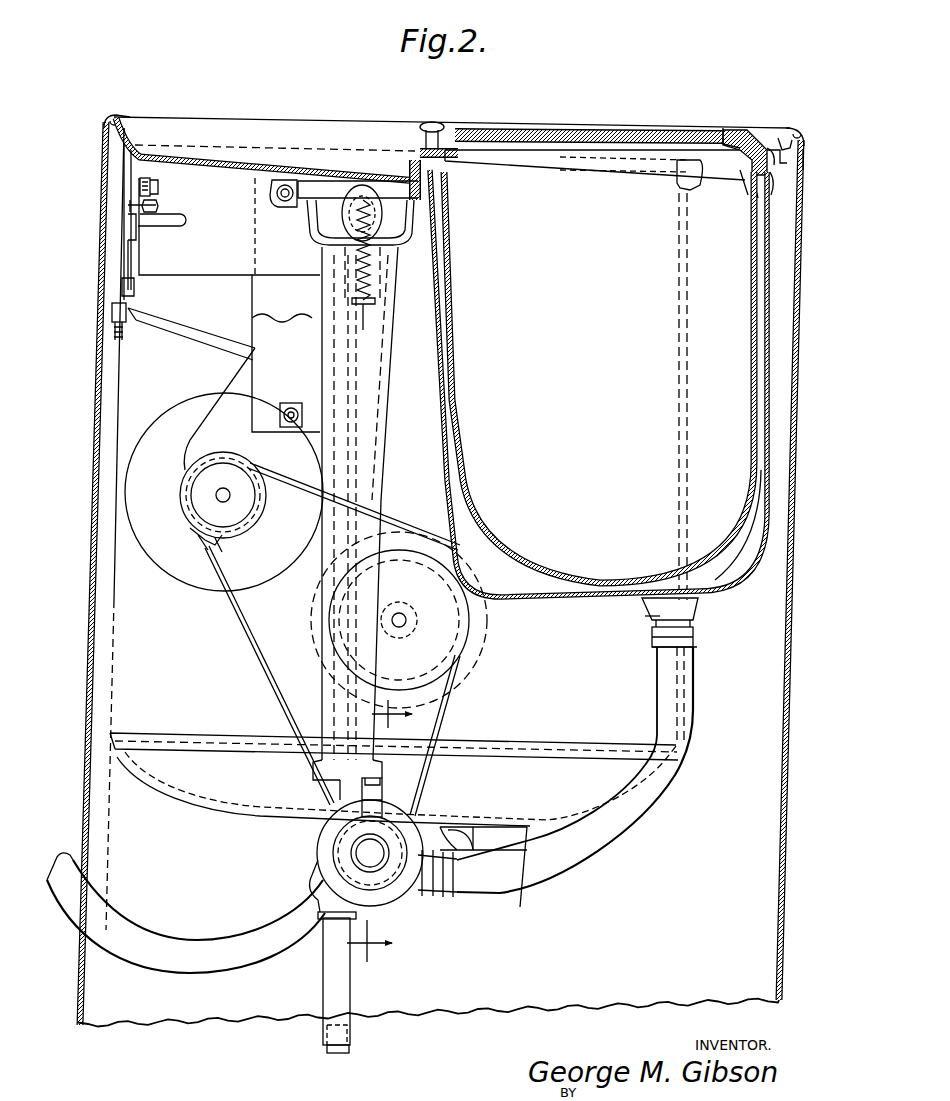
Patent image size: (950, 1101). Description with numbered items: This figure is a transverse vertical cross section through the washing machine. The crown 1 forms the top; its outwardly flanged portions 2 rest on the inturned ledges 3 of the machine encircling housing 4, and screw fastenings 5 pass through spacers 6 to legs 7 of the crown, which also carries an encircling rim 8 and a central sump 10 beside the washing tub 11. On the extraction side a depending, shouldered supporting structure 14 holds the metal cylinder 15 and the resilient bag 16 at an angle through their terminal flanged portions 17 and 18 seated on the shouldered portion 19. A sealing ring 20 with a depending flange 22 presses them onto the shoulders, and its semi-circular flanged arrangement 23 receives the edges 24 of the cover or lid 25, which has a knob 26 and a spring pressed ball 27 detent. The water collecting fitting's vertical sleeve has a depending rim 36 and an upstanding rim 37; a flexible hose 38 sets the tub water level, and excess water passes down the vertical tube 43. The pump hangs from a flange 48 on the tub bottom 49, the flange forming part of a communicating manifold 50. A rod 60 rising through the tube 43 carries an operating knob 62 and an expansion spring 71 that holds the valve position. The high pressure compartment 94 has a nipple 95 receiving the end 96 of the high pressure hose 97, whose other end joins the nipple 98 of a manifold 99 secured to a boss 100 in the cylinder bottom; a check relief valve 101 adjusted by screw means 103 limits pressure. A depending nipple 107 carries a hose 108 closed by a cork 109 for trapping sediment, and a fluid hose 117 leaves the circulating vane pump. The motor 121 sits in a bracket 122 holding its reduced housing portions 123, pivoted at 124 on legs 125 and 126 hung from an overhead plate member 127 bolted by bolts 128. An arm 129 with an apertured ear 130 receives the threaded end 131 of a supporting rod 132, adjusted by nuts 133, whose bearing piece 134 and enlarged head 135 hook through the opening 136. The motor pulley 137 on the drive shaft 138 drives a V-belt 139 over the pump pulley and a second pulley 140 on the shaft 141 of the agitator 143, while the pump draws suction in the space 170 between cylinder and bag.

The crown 1 is at (266, 129).
The outwardly flanged portions 2 is at (112, 116).
The inturned ledges 3 is at (104, 135).
The machine encircling housing 4 is at (97, 470).
The screw fastenings 5 is at (126, 202).
The spacers 6 is at (110, 170).
The legs 7 is at (274, 186).
The encircling barrier or rim 8 is at (330, 127).
The central sump 10 is at (379, 839).
The washing tub 11 is at (640, 690).
The supporting structure 14 is at (788, 162).
The metal cylinder 15 is at (770, 272).
The resilient bag 16 is at (757, 316).
The terminal flanged portion 17 is at (778, 140).
The terminal flanged portion 18 is at (760, 148).
The shouldered portion 19 is at (772, 178).
The sealing ring 20 is at (740, 168).
The depending flange 22 is at (426, 178).
The semi-circular flanged arrangement 23 is at (735, 148).
The edges 24 is at (728, 133).
The cover or lid 25 is at (522, 135).
The knob 26 is at (434, 124).
The spring pressed ball 27 is at (468, 165).
The depending rim 36 is at (376, 290).
The upstanding rim 37 is at (378, 257).
The flexible hose or conduit 38 is at (357, 185).
The tube or hose connection 43 is at (365, 468).
The flange 48 is at (475, 827).
The bottom 49 is at (516, 874).
The communicating manifold 50 is at (452, 836).
The rod 60 is at (368, 310).
The operating knob 62 is at (368, 196).
The expansion spring 71 is at (330, 266).
The high pressure compartment 94 is at (378, 880).
The nipple 95 is at (422, 889).
The end of high pressure hose 96 is at (450, 894).
The high pressure hose 97 is at (555, 877).
The nipple 98 is at (645, 618).
The manifold 99 is at (690, 628).
The boss 100 is at (700, 600).
The check relief valve 101 is at (402, 790).
The screw means 103 is at (384, 773).
The depending nipple 107 is at (318, 896).
The hose 108 is at (326, 980).
The releasable plug or cork 109 is at (330, 1053).
The fluid hose 117 is at (158, 942).
The motor 121 is at (186, 575).
The bracket 122 is at (222, 393).
The reduced motor housing portions 123 is at (213, 466).
The pivotal mounting 124 is at (305, 419).
The leg 125 is at (266, 296).
The leg 126 is at (266, 326).
The overhead plate member 127 is at (225, 220).
The bolts 128 is at (147, 186).
The laterally arranged arm 129 is at (172, 324).
The apertured ear 130 is at (134, 324).
The threaded end 131 is at (122, 292).
The supporting rod 132 is at (128, 257).
The nuts 133 is at (111, 314).
The bearing piece 134 is at (152, 192).
The enlarged head 135 is at (158, 208).
The opening 136 is at (130, 226).
The pulley 137 is at (248, 514).
The motor drive shaft 138 is at (228, 503).
The V-belt 139 is at (248, 660).
The second pulley 140 is at (468, 661).
The shaft 141 is at (398, 626).
The agitator or impeller 143 is at (478, 633).
The space 170 is at (762, 517).